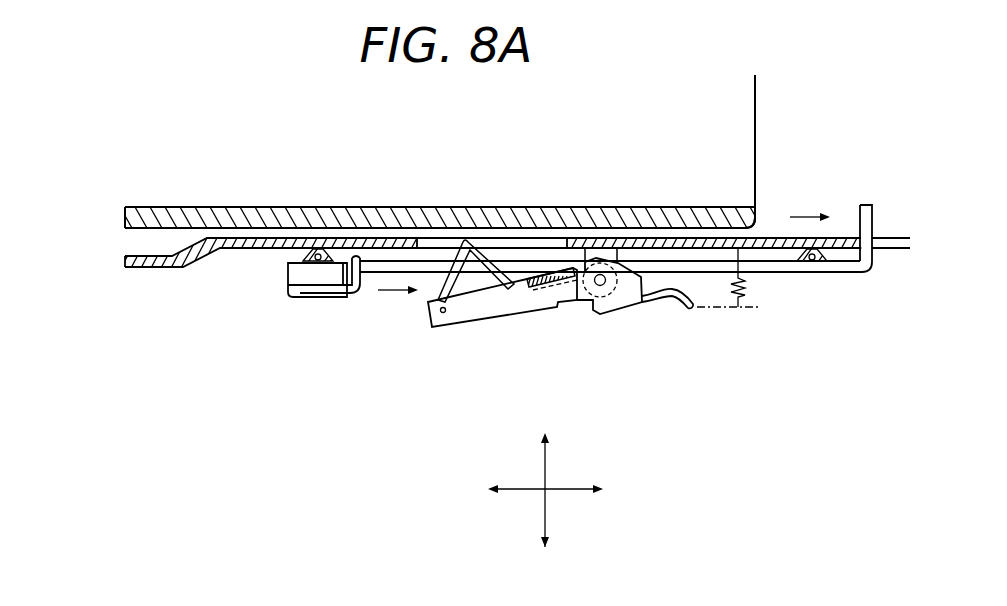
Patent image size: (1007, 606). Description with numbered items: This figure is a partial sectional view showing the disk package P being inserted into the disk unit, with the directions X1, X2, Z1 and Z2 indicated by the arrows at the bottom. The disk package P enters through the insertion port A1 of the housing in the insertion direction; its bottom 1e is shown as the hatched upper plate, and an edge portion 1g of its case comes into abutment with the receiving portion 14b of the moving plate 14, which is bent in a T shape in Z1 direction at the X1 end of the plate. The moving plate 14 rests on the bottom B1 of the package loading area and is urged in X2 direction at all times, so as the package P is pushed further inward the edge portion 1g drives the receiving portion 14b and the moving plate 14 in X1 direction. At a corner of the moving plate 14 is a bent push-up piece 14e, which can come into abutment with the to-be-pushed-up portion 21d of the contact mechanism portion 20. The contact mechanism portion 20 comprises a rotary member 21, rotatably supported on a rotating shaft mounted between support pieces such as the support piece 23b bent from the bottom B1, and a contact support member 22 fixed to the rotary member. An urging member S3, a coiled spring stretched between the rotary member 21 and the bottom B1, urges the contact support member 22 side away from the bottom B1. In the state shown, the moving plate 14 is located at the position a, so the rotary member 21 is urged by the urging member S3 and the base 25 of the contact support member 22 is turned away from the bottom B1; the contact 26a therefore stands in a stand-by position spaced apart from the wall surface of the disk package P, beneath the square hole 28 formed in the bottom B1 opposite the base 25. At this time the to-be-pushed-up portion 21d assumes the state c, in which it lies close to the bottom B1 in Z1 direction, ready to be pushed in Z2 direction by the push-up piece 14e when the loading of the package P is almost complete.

The bottom 1e is at (165, 223).
The edge portion 1g is at (756, 224).
The disk package P is at (742, 130).
The bottom B1 is at (237, 250).
The insertion port A1 is at (130, 243).
The moving plate 14 is at (368, 275).
The receiving portion 14b is at (873, 222).
The push-up piece 14e is at (300, 297).
The contact 26a is at (462, 243).
The square hole 28 is at (437, 240).
The contact support member 22 is at (430, 343).
The base 25 is at (517, 310).
The state c is at (465, 343).
The contact mechanism portion 20 is at (485, 370).
The rotary member 21 is at (632, 325).
The support piece 23b is at (600, 314).
The to-be-pushed-up portion 21d is at (680, 308).
The urging member S3 is at (747, 285).
The position a is at (825, 300).
The Z1 direction Z1 is at (541, 475).
The Z2 direction Z2 is at (542, 558).
The X1 direction X1 is at (565, 490).
The X2 direction X2 is at (476, 490).